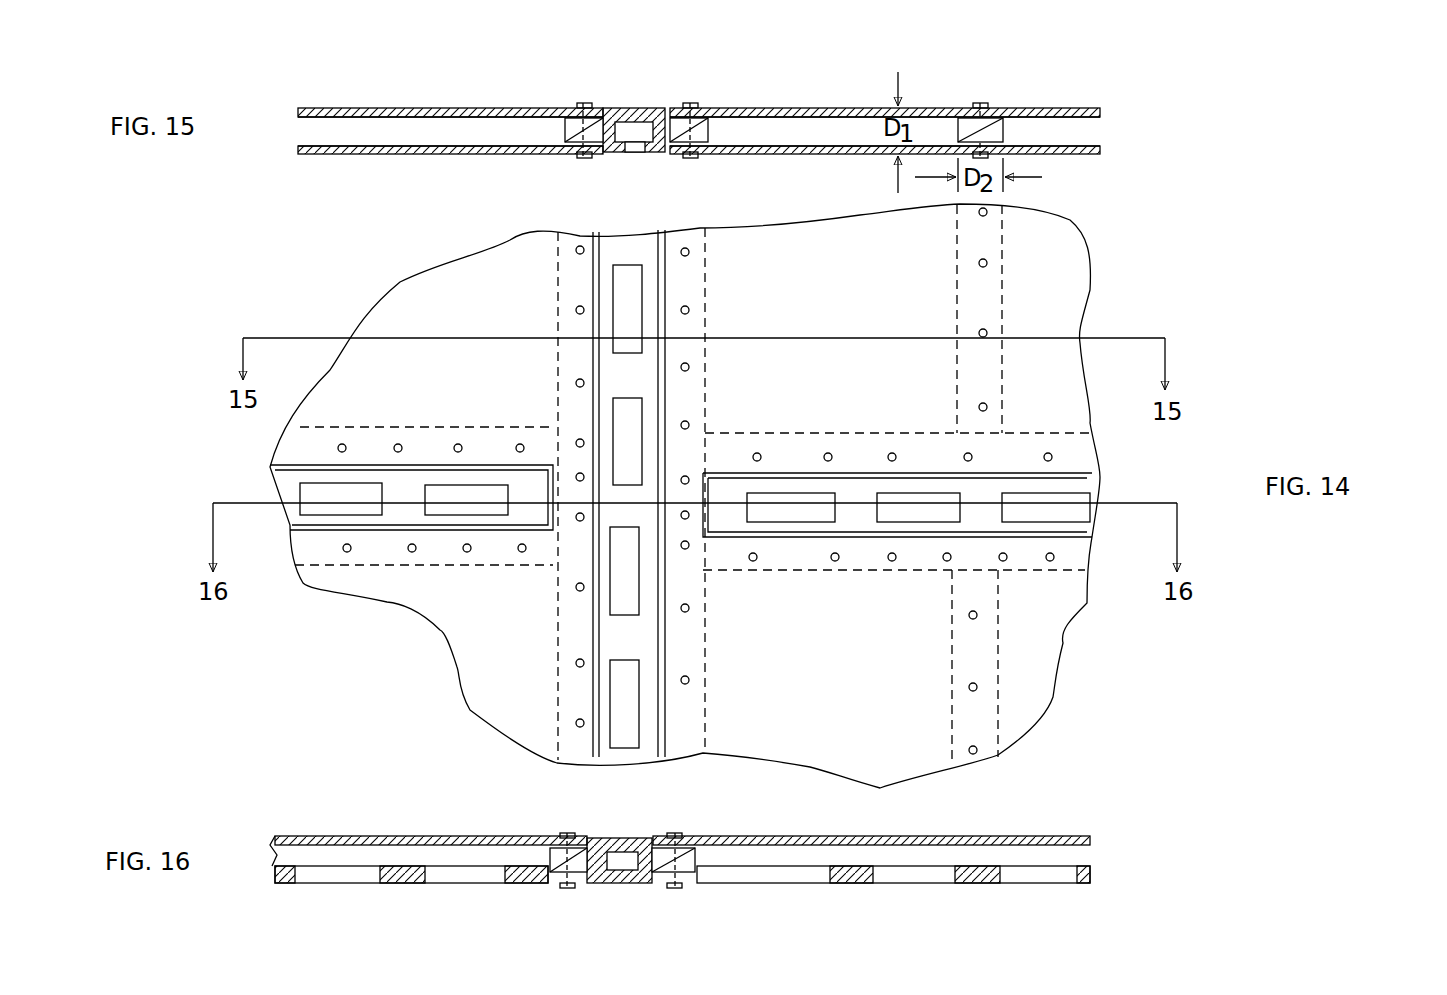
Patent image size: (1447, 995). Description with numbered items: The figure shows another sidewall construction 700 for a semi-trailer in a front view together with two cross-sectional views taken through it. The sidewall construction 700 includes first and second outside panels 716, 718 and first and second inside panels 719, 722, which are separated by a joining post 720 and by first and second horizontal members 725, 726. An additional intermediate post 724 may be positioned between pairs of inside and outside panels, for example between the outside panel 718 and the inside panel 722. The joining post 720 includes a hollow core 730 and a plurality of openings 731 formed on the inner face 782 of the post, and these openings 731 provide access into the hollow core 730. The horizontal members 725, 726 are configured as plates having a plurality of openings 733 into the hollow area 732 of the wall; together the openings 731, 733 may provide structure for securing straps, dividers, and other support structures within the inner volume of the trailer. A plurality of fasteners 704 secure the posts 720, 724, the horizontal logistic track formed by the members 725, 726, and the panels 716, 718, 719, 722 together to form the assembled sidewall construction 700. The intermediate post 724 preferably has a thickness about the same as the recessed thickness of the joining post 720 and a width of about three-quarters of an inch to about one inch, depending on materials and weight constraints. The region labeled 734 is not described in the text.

In FIG. 14, the sidewall construction 700 is at (1115, 285).
In FIG. 15, the fasteners 704 is at (578, 104).
In FIG. 15, the first outside panel 716 is at (320, 108).
In FIG. 16, the first outside panel 716 is at (318, 836).
In FIG. 15, the second outside panel 718 is at (1080, 108).
In FIG. 16, the second outside panel 718 is at (1040, 825).
In FIG. 15, the first inside panel 719 is at (312, 154).
In FIG. 14, the first inside panel 719 is at (403, 308).
In FIG. 16, the first inside panel 719 is at (565, 888).
In FIG. 15, the joining post 720 is at (668, 110).
In FIG. 14, the joining post 720 is at (616, 752).
In FIG. 16, the joining post 720 is at (648, 827).
In FIG. 14, the second inside panel 722 is at (1048, 228).
In FIG. 16, the second inside panel 722 is at (680, 888).
In FIG. 15, the intermediate post 724 is at (995, 125).
In FIG. 14, the intermediate post 724 is at (1003, 258).
In FIG. 15, the first horizontal member 725 is at (430, 132).
In FIG. 14, the first horizontal member 725 is at (278, 477).
In FIG. 16, the first horizontal member 725 is at (275, 882).
In FIG. 15, the second horizontal member 726 is at (835, 130).
In FIG. 14, the second horizontal member 726 is at (1097, 486).
In FIG. 16, the second horizontal member 726 is at (1093, 880).
In FIG. 15, the hollow core 730 is at (633, 128).
In FIG. 14, the hollow core 730 is at (633, 305).
In FIG. 16, the hollow core 730 is at (622, 858).
In FIG. 15, the openings 731 is at (641, 150).
In FIG. 14, the openings 731 is at (627, 267).
In FIG. 15, the hollow area 732 is at (1068, 152).
In FIG. 14, the hollow area 732 is at (340, 503).
In FIG. 16, the hollow area 732 is at (288, 858).
In FIG. 14, the openings 733 is at (300, 505).
In FIG. 16, the openings 733 is at (298, 873).
In FIG. 14, the web 734 is at (986, 489).
In FIG. 14, the inner face 782 is at (628, 378).